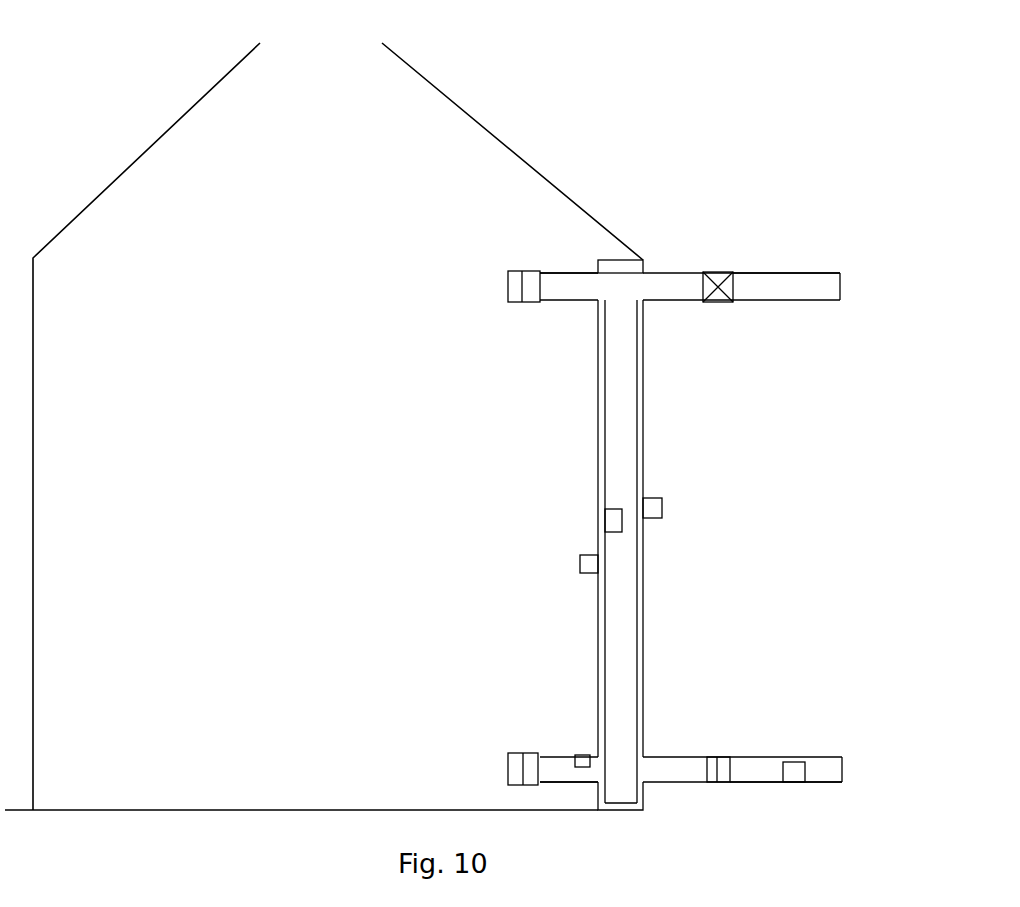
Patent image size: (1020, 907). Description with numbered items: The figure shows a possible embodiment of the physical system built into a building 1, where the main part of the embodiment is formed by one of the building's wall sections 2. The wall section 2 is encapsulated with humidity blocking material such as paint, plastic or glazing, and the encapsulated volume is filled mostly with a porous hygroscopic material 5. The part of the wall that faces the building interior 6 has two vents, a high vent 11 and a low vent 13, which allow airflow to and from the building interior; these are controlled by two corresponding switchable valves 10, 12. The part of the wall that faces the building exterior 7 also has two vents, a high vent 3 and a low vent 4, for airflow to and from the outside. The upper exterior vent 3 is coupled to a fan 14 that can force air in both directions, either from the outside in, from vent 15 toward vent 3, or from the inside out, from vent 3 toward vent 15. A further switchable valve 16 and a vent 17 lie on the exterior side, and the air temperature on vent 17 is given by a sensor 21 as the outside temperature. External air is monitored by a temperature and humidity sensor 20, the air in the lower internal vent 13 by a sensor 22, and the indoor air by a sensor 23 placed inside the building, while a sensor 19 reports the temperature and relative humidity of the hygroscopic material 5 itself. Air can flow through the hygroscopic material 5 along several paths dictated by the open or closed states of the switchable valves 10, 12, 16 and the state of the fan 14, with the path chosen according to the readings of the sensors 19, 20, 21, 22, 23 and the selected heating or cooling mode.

The building 1 is at (245, 293).
The wall section 2 is at (658, 270).
The high exterior vent 3 is at (680, 293).
The low exterior vent 4 is at (677, 763).
The porous hygroscopic material 5 is at (625, 480).
The interior-facing wall part 6 is at (598, 415).
The exterior-facing wall part 7 is at (643, 582).
The switchable valve 10 is at (512, 285).
The high interior vent 11 is at (565, 283).
The switchable valve 12 is at (518, 767).
The low interior vent 13 is at (567, 762).
The fan 14 is at (720, 287).
The exterior air vent 15 is at (825, 287).
The switchable valve 16 is at (722, 763).
The vent 17 is at (818, 765).
The temperature and humidity sensor 19 is at (610, 517).
The temperature and humidity sensor 20 is at (652, 508).
The sensor 21 is at (797, 767).
The temperature and humidity sensor 22 is at (583, 757).
The temperature and humidity sensor 23 is at (590, 565).